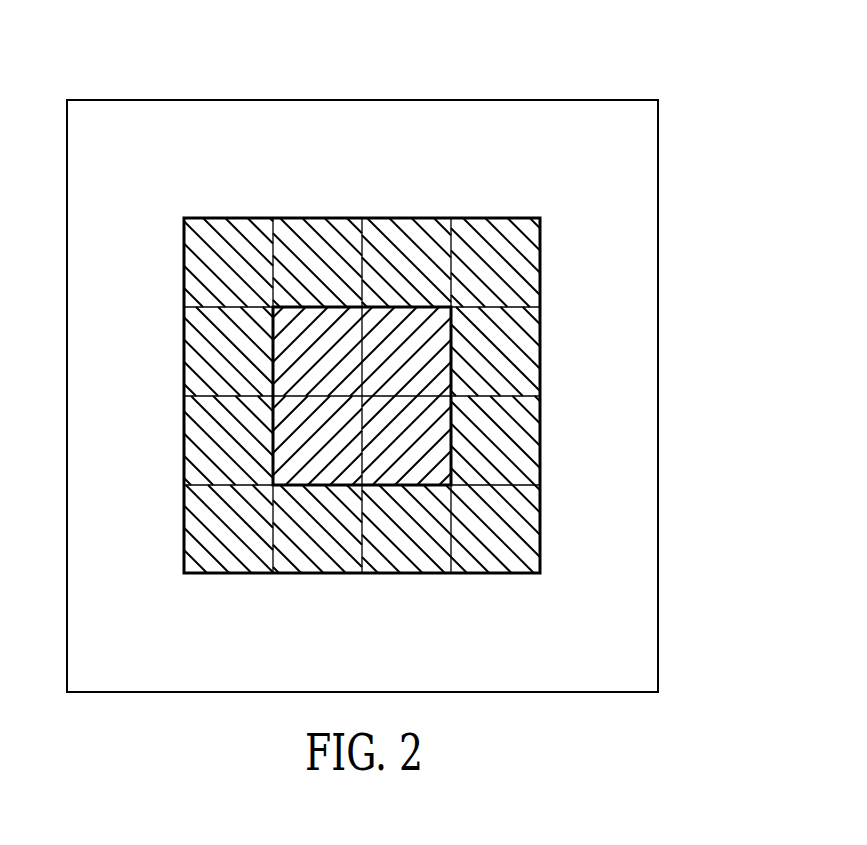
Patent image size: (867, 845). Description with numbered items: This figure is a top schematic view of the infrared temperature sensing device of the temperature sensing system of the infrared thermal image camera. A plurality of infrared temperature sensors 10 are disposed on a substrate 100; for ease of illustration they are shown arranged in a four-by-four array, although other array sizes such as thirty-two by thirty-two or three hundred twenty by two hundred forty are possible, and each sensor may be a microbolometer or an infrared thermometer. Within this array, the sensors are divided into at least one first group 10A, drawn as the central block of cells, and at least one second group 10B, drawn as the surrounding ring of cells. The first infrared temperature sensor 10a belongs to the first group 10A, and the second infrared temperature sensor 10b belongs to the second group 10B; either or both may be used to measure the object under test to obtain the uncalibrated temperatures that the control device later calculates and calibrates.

The substrate 100 is at (362, 100).
The infrared temperature sensors 10 is at (481, 352).
The first group 10A is at (322, 307).
The second group 10B is at (433, 218).
The first infrared temperature sensor 10a is at (425, 348).
The second infrared temperature sensor 10b is at (513, 262).